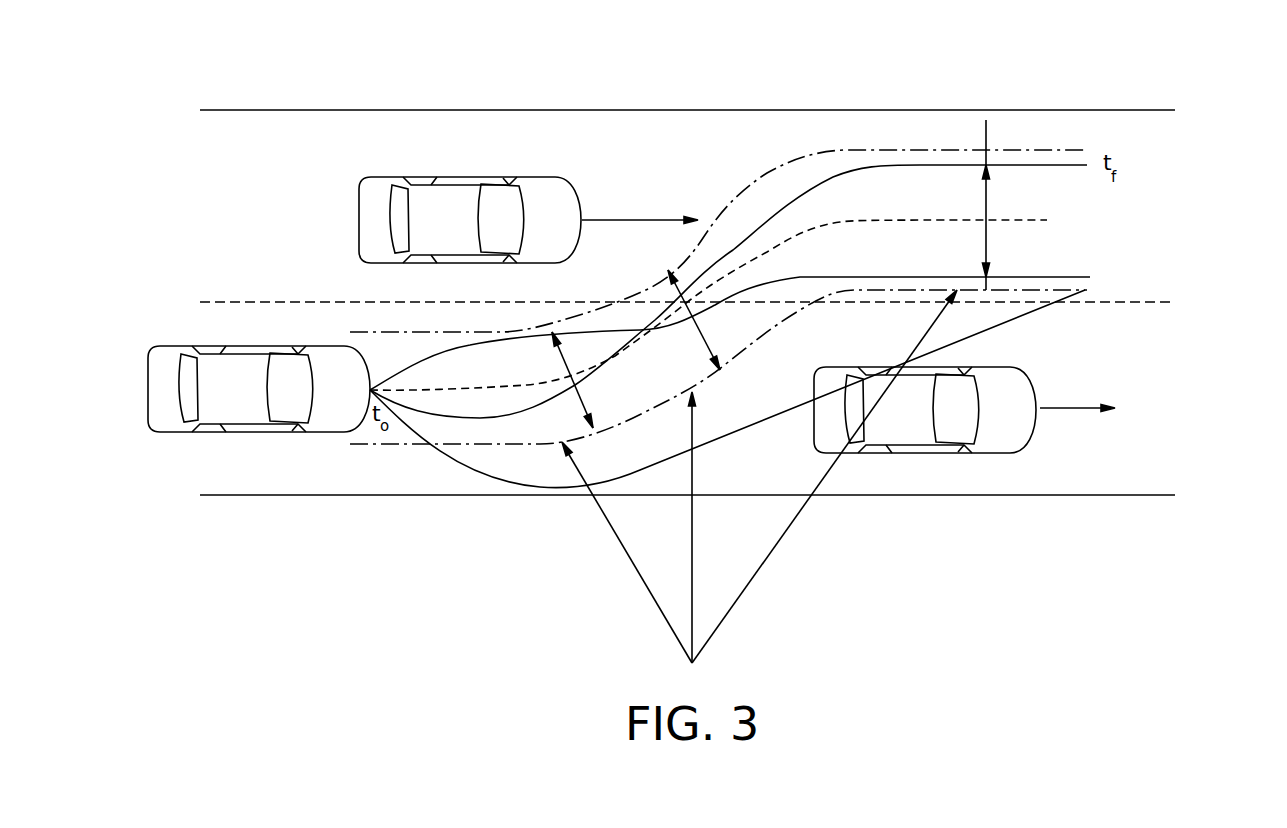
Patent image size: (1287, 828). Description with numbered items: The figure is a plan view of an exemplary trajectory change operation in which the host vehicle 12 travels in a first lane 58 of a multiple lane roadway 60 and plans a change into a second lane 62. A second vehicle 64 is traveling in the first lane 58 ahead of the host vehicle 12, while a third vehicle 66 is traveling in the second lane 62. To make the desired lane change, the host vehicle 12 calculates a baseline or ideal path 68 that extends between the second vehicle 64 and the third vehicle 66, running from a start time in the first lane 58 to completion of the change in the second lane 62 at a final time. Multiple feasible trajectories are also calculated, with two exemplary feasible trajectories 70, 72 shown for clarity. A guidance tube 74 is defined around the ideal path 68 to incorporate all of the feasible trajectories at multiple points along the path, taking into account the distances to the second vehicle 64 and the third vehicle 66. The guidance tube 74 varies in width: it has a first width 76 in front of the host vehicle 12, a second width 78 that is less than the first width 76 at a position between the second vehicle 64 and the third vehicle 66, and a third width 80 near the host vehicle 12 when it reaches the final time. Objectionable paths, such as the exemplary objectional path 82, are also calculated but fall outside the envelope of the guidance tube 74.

The host vehicle 12 is at (248, 405).
The first lane 58 is at (307, 473).
The multiple lane roadway 60 is at (714, 70).
The second lane 62 is at (285, 143).
The second vehicle 64 is at (1005, 418).
The third vehicle 66 is at (458, 202).
The ideal path 68 is at (1059, 220).
The feasible trajectory 70 is at (1049, 162).
The feasible trajectory 72 is at (1090, 277).
The guidance tube 74 is at (759, 492).
The first width 76 is at (593, 428).
The second width 78 is at (668, 270).
The third width 80 is at (986, 122).
The objectional path 82 is at (761, 442).